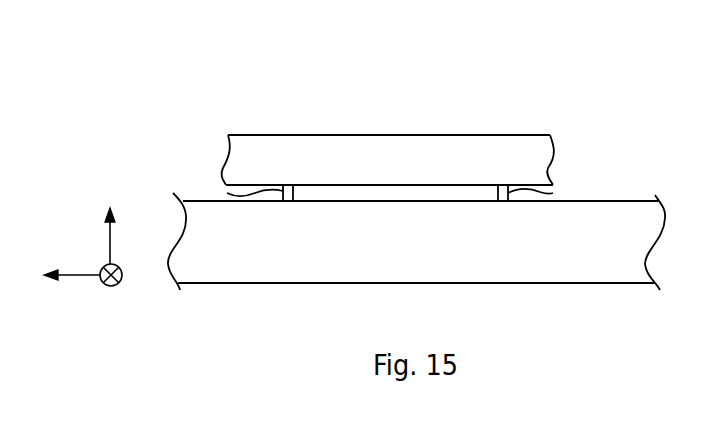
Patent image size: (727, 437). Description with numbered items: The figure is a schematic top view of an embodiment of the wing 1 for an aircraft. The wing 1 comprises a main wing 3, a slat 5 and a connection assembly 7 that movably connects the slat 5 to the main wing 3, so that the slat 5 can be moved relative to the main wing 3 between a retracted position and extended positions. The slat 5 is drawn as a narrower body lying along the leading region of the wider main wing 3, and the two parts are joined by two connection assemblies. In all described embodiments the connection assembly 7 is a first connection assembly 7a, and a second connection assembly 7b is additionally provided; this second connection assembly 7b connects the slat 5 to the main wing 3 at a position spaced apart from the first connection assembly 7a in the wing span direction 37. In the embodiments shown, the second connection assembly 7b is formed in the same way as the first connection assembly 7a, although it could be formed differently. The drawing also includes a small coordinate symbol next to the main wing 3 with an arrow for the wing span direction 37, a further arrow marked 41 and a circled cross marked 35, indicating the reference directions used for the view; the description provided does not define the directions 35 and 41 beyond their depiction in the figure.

The wing 1 is at (532, 87).
The main wing 3 is at (412, 262).
The slat 5 is at (412, 173).
The connection assembly 7 is at (390, 191).
The first connection assembly 7a is at (227, 193).
The second connection assembly 7b is at (553, 193).
The axis direction (out of plane) 35 is at (114, 290).
The wing span direction 37 is at (71, 291).
The axis direction (vertical) 41 is at (95, 235).